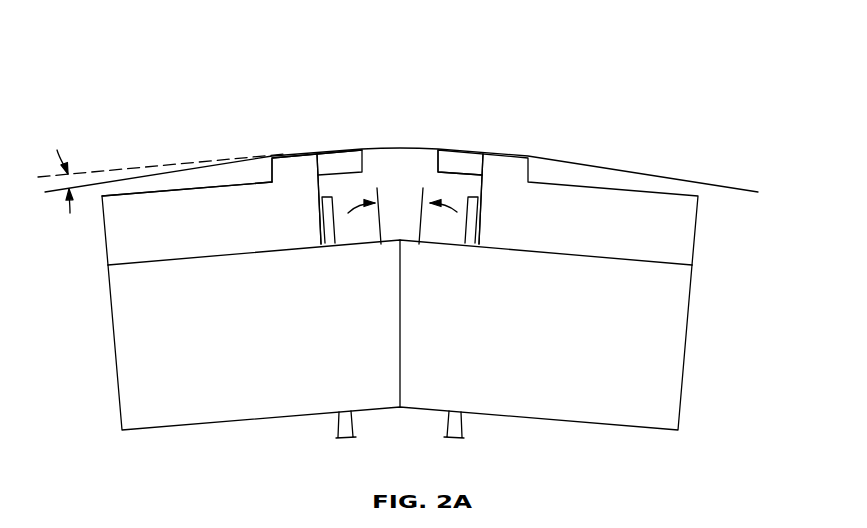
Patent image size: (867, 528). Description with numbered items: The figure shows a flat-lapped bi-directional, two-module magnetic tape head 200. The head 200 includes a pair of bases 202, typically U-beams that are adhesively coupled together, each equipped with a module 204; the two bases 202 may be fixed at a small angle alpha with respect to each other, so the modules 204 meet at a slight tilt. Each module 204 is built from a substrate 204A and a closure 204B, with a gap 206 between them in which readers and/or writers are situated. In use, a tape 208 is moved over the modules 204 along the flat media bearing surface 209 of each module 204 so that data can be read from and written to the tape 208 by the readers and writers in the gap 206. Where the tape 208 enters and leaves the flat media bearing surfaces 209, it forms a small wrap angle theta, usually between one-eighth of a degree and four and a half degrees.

The two-module magnetic tape head 200 is at (157, 120).
The base 202 is at (113, 325).
The module 204 is at (104, 236).
The substrate 204A is at (162, 215).
The closure 204B is at (440, 165).
The gap 206 is at (315, 152).
The tape 208 is at (617, 169).
The media bearing surface 209 is at (298, 155).